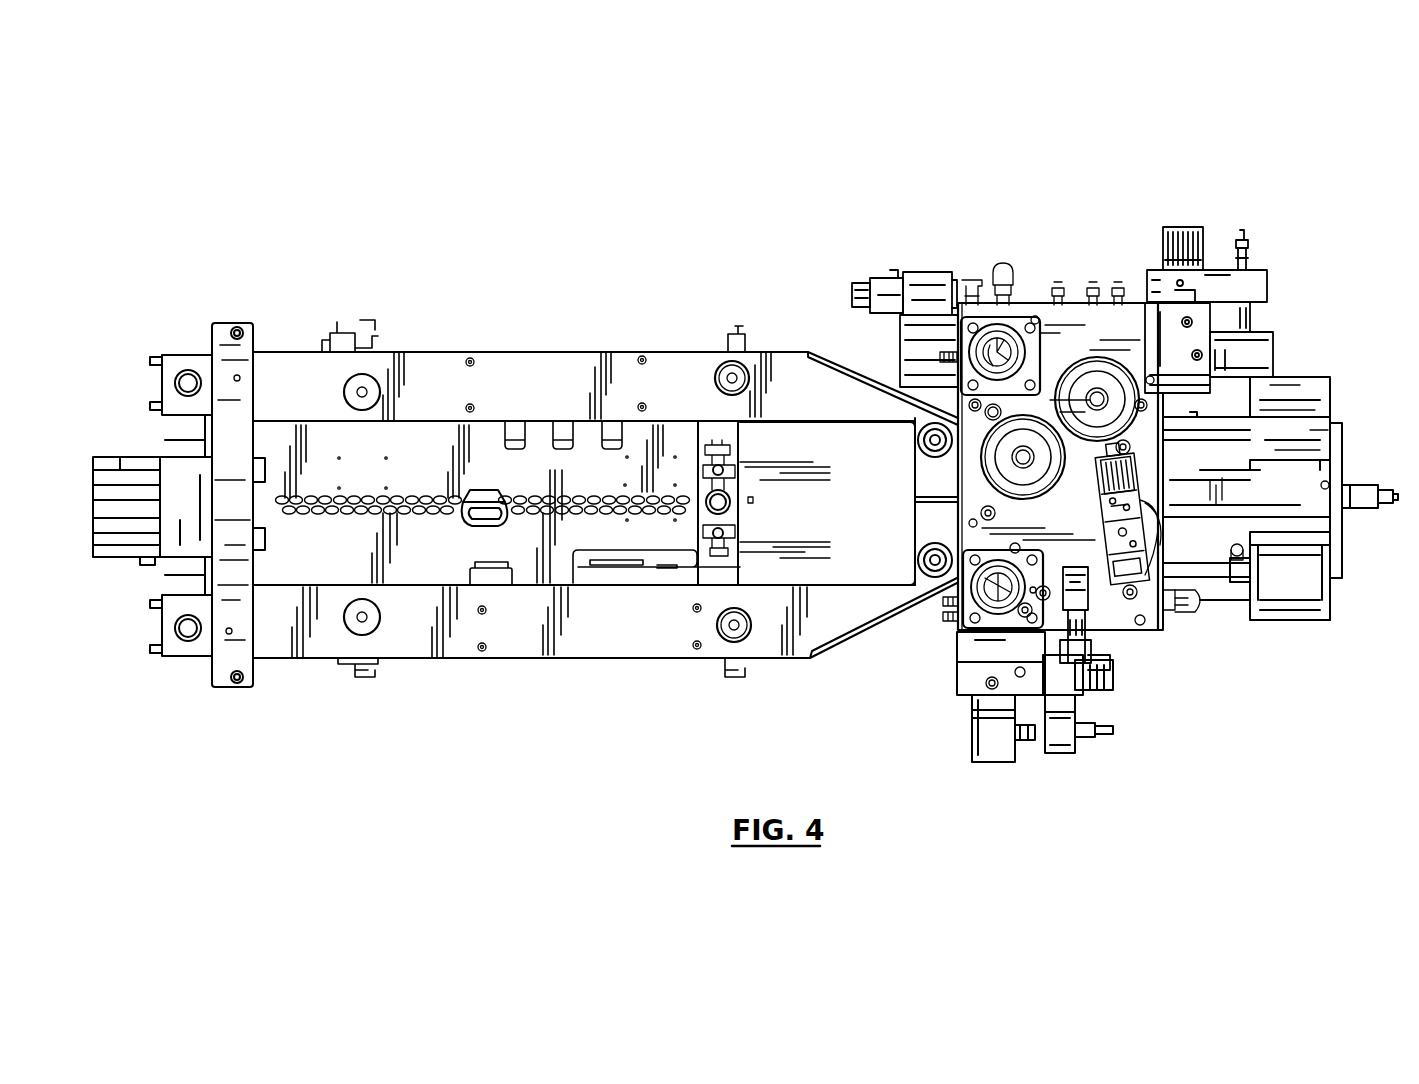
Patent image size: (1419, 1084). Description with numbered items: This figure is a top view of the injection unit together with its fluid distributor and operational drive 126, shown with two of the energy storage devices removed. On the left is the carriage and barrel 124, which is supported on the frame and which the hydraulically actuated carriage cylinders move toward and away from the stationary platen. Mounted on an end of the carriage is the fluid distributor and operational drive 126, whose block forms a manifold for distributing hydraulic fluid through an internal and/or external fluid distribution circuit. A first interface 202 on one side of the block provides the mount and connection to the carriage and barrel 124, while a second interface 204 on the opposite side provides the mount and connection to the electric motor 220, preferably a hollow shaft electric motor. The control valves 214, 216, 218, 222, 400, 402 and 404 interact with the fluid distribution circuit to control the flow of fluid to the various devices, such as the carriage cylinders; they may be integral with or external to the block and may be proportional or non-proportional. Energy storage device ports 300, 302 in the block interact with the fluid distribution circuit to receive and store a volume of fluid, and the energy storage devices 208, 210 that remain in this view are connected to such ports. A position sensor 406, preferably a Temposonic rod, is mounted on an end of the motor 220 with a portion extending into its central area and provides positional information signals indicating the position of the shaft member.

The carriage and barrel 124 is at (471, 333).
The fluid distributor and operational drive 126 is at (1240, 760).
The first interface 202 is at (958, 468).
The second interface 204 is at (1170, 578).
The energy storage device 208 is at (1033, 417).
The energy storage device 210 is at (1100, 357).
The control valve 214 is at (990, 760).
The control valve 216 is at (1062, 753).
The control valve 218 is at (1165, 513).
The electric motor 220 is at (1235, 580).
The control valve 222 is at (1080, 645).
The energy storage device port 300 is at (1017, 320).
The energy storage device port 302 is at (982, 640).
The control valve 400 is at (935, 273).
The control valve 402 is at (1258, 266).
The control valve 404 is at (1267, 333).
The position sensor 406 is at (1368, 481).